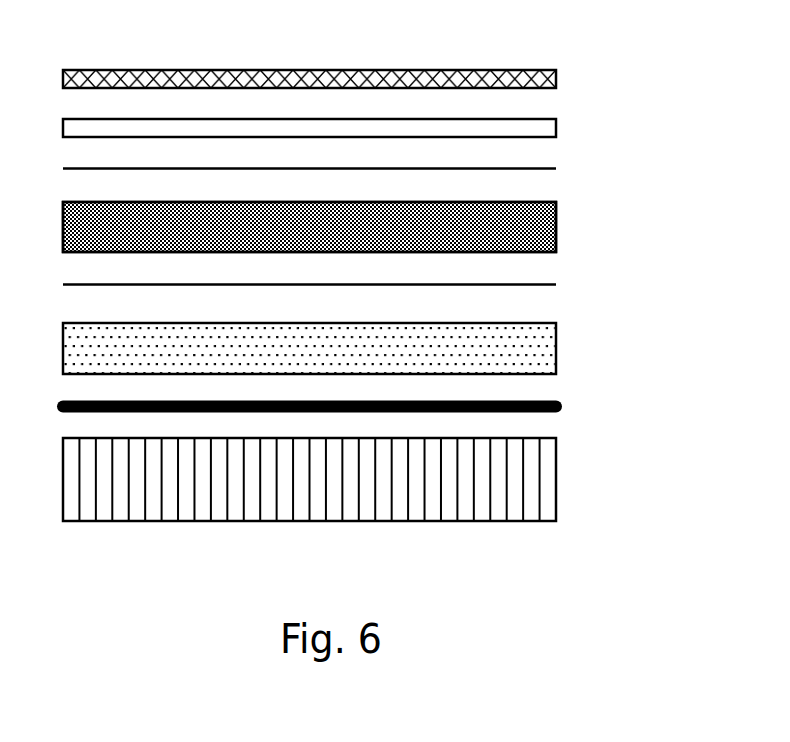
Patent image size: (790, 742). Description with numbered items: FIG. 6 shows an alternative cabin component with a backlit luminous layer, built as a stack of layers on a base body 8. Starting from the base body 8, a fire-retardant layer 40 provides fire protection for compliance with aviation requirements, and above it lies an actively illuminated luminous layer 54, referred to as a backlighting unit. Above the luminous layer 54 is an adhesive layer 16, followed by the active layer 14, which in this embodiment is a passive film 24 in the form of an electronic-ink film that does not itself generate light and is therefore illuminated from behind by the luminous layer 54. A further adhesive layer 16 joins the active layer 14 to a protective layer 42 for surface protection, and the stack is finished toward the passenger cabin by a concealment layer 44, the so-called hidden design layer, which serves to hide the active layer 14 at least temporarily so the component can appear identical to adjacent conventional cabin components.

The concealment layer 44 is at (556, 80).
The protective layer 42 is at (556, 128).
The adhesive layer 16 is at (556, 169).
The active layer 14 is at (557, 230).
The passive film 24 is at (309, 227).
The luminous layer 54 is at (557, 352).
The fire-retardant layer 40 is at (562, 406).
The base body 8 is at (556, 483).